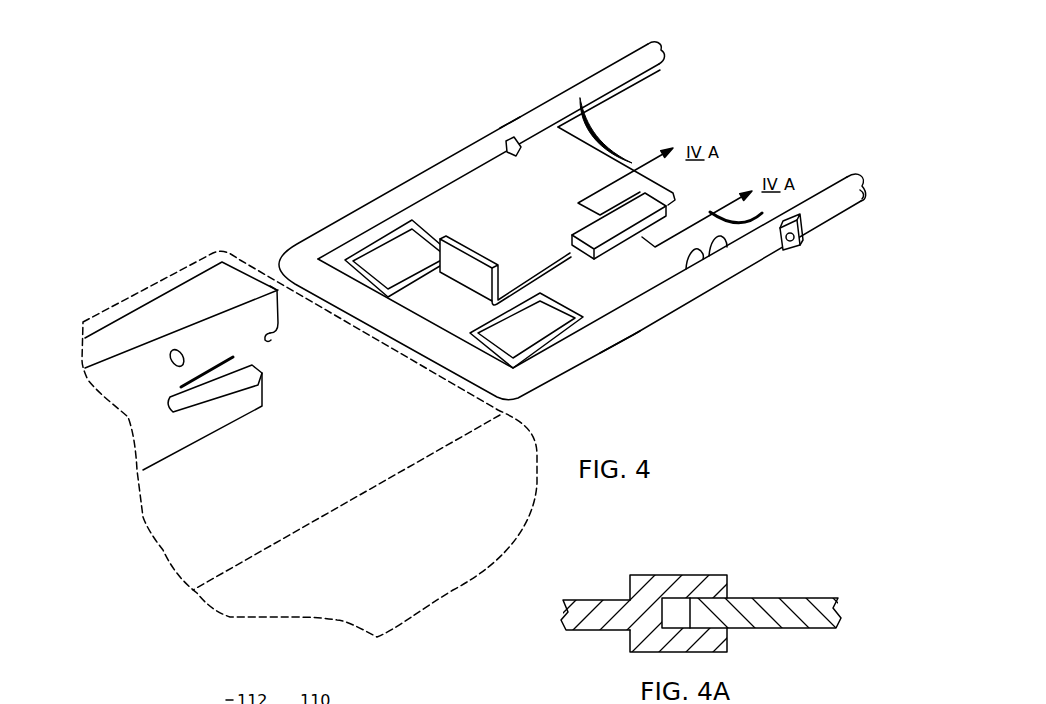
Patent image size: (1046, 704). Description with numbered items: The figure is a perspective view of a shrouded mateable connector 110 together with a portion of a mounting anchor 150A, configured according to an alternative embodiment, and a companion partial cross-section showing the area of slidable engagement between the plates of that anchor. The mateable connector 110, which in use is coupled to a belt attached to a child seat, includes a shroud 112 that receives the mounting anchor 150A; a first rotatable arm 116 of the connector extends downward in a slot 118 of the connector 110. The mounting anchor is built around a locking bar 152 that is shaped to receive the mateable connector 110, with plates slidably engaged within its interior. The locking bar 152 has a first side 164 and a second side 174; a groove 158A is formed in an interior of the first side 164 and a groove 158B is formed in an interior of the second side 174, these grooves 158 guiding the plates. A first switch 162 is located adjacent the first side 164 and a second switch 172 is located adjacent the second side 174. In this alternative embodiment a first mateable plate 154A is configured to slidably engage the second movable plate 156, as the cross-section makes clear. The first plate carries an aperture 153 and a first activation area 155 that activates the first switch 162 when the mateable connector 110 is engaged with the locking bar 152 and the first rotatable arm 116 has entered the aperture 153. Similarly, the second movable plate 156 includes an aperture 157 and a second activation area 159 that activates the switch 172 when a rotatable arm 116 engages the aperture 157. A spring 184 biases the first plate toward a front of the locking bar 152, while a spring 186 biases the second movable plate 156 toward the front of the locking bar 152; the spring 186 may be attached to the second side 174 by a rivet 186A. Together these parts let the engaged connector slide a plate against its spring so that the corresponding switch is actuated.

In FIG. 4, the mateable connector 110 is at (198, 316).
In FIG. 4, the shroud 112 is at (186, 547).
In FIG. 4, the first rotatable arm 116 is at (274, 334).
In FIG. 4, the slot 118 is at (272, 363).
In FIG. 4, the mounting anchor 150A is at (296, 103).
In FIG. 4, the locking bar 152 is at (427, 347).
In FIG. 4, the aperture 153 is at (392, 253).
In FIG. 4, the first mateable plate 154A is at (478, 190).
In FIG. 4A, the first mateable plate 154A is at (598, 599).
In FIG. 4, the first activation area 155 is at (513, 137).
In FIG. 4, the second movable plate 156 is at (573, 270).
In FIG. 4A, the second movable plate 156 is at (767, 598).
In FIG. 4, the aperture 157 is at (530, 330).
In FIG. 4, the rail 158 is at (661, 68).
In FIG. 4, the groove 158A is at (680, 53).
In FIG. 4, the groove 158B is at (830, 167).
In FIG. 4, the second activation area 159 is at (691, 254).
In FIG. 4, the first switch 162 is at (522, 147).
In FIG. 4, the first side 164 is at (308, 218).
In FIG. 4, the second switch 172 is at (724, 236).
In FIG. 4, the second side 174 is at (638, 346).
In FIG. 4, the spring 184 is at (606, 145).
In FIG. 4, the spring 186 is at (757, 214).
In FIG. 4, the rivet 186A is at (798, 242).